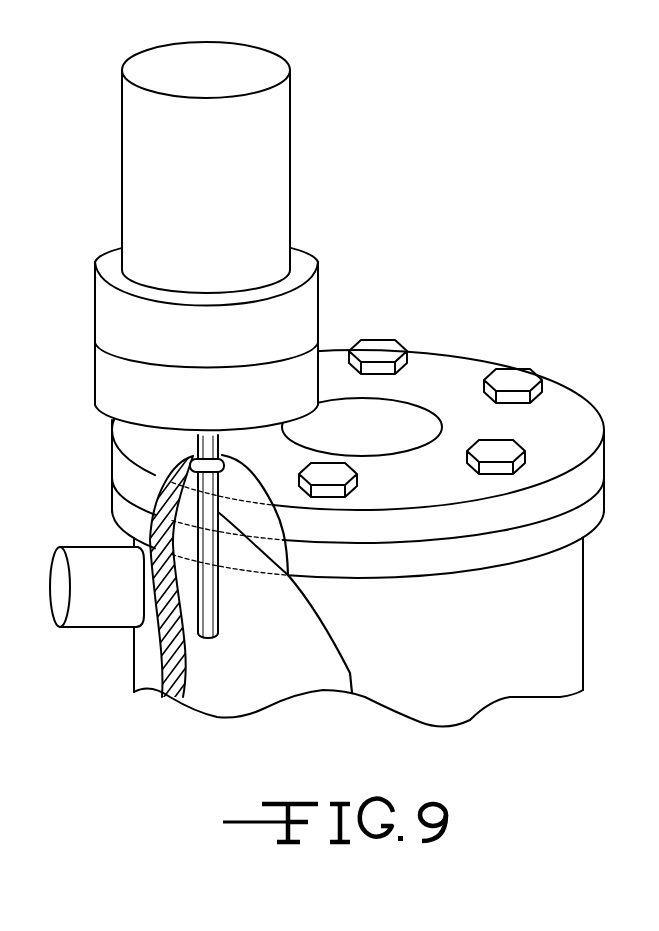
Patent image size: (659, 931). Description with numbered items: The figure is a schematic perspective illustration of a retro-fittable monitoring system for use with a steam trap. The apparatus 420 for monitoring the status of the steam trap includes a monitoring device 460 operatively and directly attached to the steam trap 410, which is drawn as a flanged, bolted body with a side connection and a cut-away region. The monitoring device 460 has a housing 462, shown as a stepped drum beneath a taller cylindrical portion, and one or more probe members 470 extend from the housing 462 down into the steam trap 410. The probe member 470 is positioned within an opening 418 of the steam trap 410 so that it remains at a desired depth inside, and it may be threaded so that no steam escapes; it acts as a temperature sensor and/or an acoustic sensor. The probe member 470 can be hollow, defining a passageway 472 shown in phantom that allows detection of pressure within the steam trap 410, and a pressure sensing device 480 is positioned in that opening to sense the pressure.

The steam trap 410 is at (472, 350).
The opening 418 is at (112, 421).
The apparatus 420 is at (285, 236).
The monitoring device 460 is at (314, 197).
The housing 462 is at (338, 350).
The probe member 470 is at (190, 536).
The passageway 472 is at (218, 585).
The pressure sensing device 480 is at (290, 578).